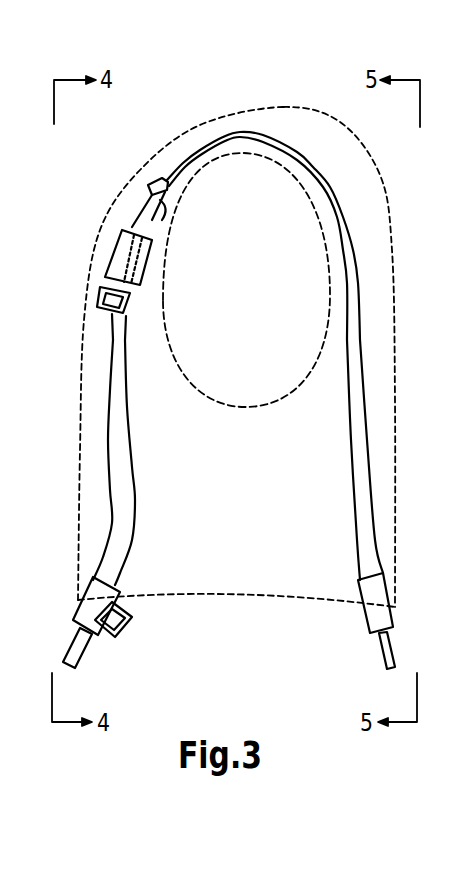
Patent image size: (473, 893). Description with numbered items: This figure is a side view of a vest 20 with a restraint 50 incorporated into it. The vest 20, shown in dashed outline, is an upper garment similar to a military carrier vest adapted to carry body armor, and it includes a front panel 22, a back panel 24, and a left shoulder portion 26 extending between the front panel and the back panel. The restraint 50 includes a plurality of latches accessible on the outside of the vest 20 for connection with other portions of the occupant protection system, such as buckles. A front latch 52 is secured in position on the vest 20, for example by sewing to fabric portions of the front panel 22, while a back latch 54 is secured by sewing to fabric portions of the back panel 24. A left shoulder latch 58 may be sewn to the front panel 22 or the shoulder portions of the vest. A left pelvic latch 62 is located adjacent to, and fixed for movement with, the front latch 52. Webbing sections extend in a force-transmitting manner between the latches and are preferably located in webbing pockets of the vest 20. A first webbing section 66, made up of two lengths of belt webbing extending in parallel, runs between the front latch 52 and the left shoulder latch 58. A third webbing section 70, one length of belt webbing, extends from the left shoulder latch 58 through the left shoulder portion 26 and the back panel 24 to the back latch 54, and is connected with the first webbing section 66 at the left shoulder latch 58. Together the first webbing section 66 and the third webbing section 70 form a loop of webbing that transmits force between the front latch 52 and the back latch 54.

The vest 20 is at (246, 609).
The front panel 22 is at (97, 380).
The back panel 24 is at (380, 418).
The left shoulder portion 26 is at (280, 124).
The restraint 50 is at (247, 410).
The front latch 52 is at (73, 657).
The back latch 54 is at (390, 650).
The left shoulder latch 58 is at (105, 295).
The left pelvic latch 62 is at (127, 630).
The first webbing section 66 is at (122, 444).
The third webbing section 70 is at (356, 437).